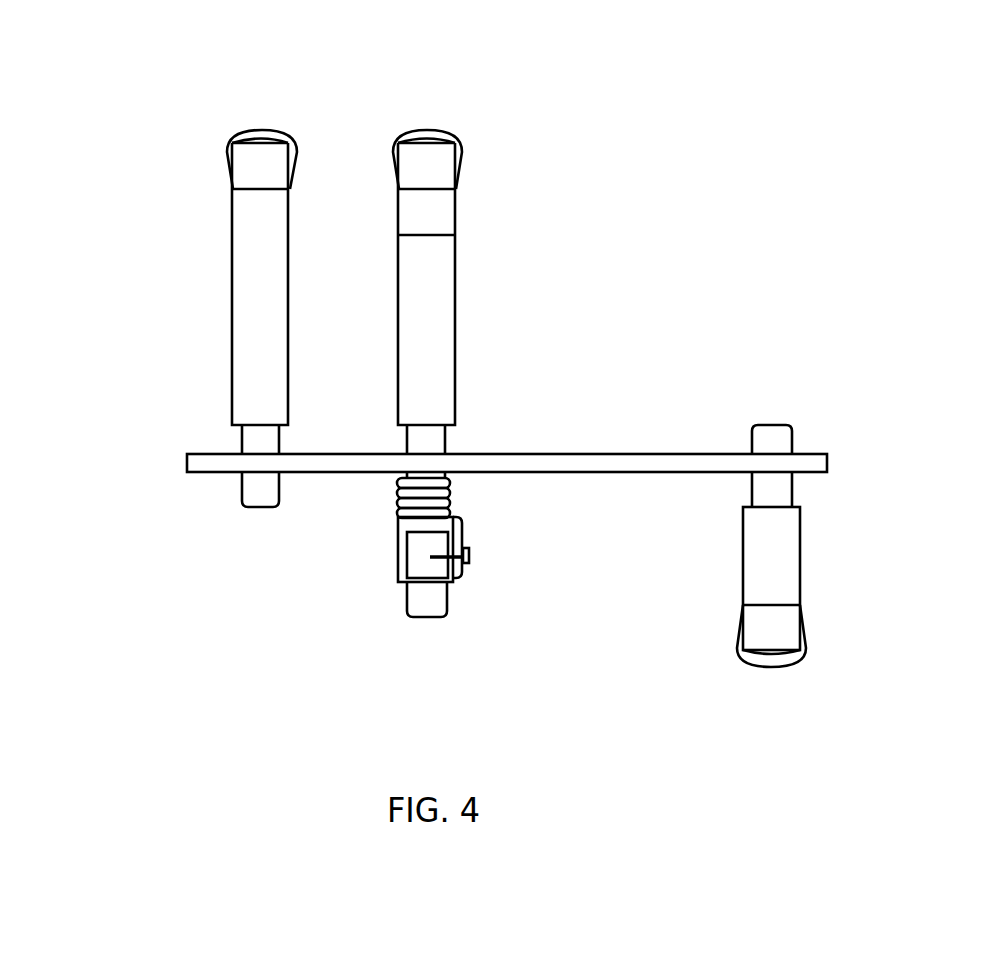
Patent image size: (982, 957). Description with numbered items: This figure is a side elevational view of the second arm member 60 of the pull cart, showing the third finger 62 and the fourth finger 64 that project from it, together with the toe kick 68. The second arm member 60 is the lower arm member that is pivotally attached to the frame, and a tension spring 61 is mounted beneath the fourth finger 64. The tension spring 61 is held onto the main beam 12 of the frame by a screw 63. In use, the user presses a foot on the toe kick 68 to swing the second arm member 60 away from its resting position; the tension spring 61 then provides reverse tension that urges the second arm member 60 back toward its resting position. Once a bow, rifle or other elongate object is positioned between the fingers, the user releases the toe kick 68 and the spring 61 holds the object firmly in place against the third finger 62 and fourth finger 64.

The second arm member 60 is at (607, 427).
The third finger 62 is at (262, 132).
The fourth finger 64 is at (460, 143).
The tension spring 61 is at (397, 493).
The screw 63 is at (470, 555).
The main beam 12 is at (397, 555).
The toe kick 68 is at (800, 552).